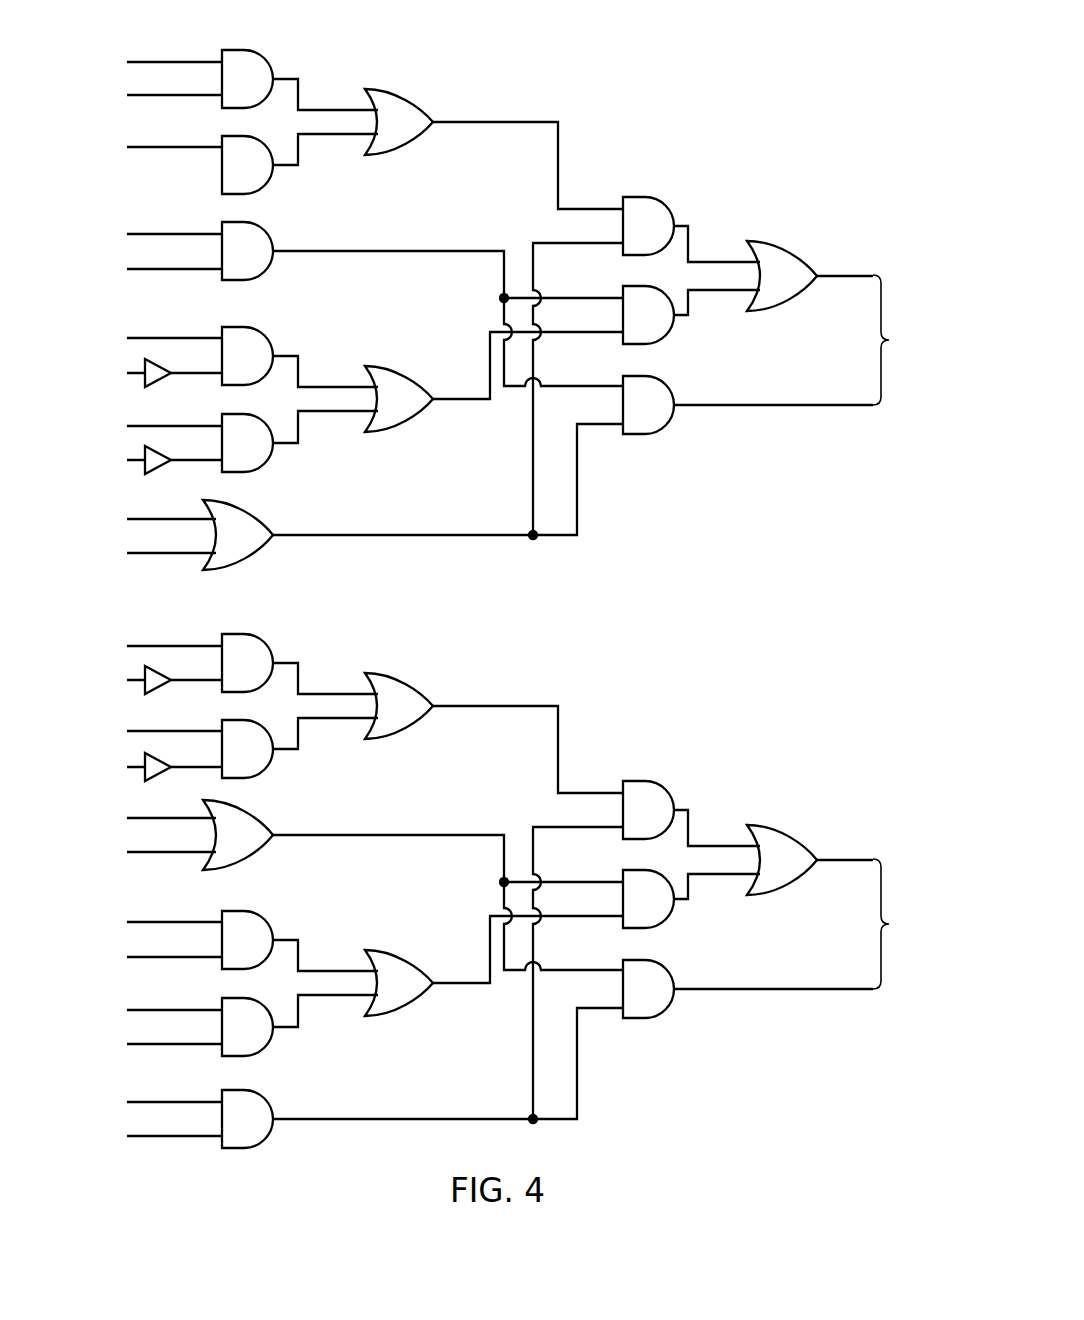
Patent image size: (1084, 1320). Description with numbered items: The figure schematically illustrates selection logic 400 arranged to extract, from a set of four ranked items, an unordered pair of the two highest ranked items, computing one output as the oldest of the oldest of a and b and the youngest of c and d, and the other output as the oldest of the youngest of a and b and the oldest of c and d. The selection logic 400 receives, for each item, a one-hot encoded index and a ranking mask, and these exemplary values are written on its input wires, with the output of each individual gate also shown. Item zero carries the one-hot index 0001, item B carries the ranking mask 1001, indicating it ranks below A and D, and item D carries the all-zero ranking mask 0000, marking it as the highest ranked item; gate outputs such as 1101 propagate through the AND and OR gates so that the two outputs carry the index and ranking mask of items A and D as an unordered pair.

The selection logic 400 is at (499, 601).
The one-hot encoded index 0001 is at (375, 304).
The ranking mask 1101 is at (375, 497).
The ranking mask 1001 is at (375, 885).
The ranking mask 0000 is at (375, 1078).